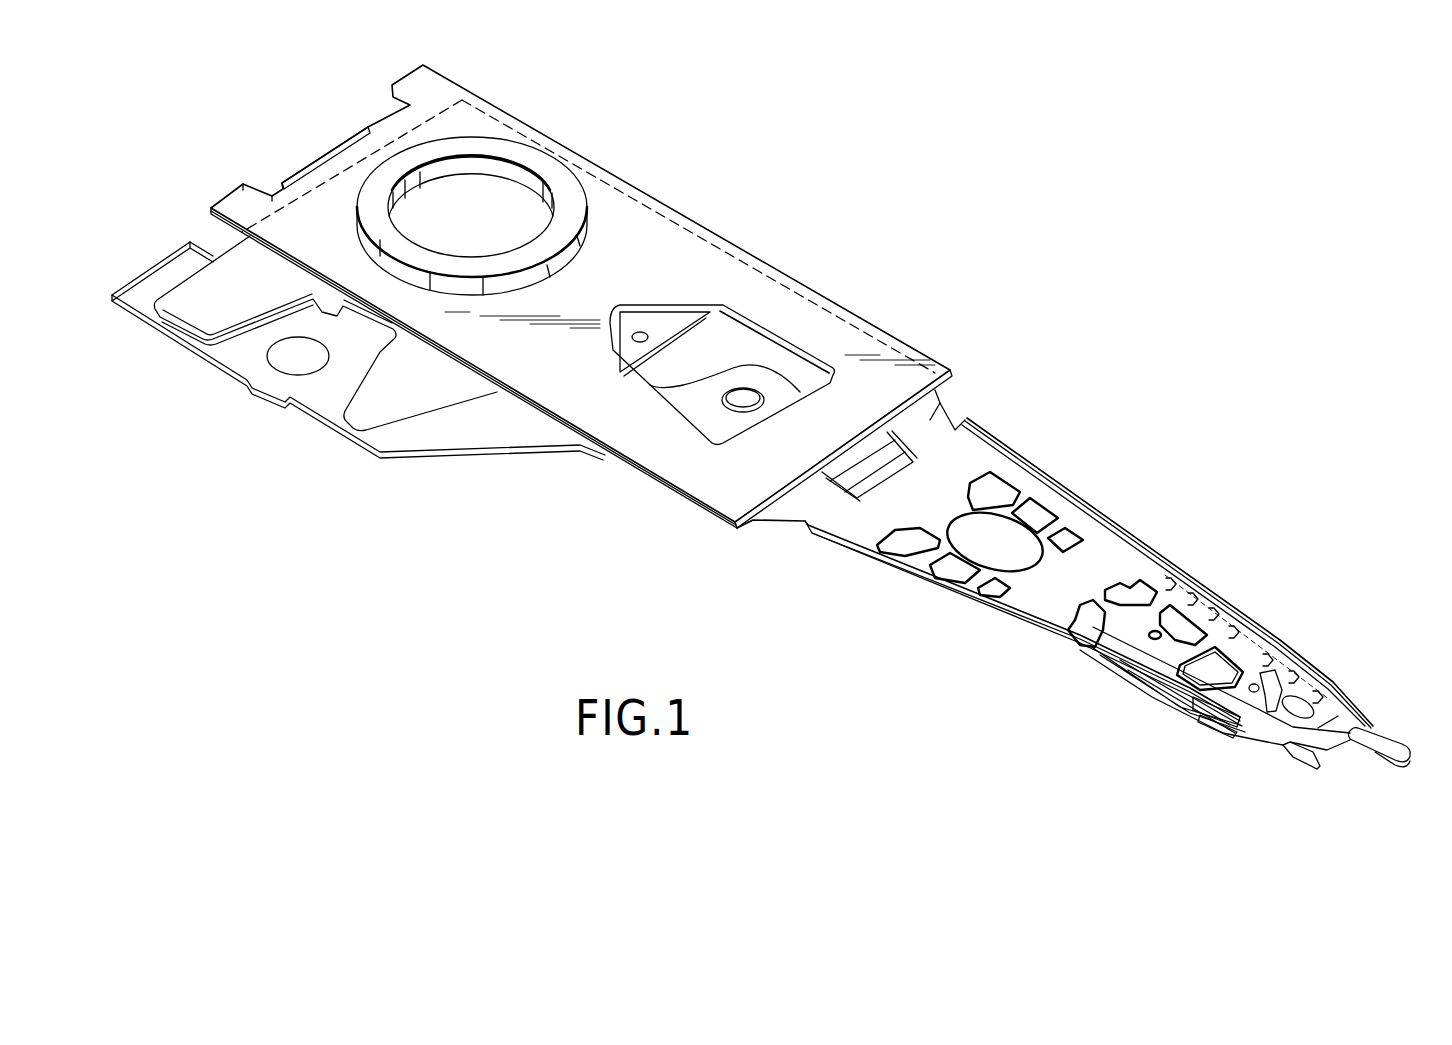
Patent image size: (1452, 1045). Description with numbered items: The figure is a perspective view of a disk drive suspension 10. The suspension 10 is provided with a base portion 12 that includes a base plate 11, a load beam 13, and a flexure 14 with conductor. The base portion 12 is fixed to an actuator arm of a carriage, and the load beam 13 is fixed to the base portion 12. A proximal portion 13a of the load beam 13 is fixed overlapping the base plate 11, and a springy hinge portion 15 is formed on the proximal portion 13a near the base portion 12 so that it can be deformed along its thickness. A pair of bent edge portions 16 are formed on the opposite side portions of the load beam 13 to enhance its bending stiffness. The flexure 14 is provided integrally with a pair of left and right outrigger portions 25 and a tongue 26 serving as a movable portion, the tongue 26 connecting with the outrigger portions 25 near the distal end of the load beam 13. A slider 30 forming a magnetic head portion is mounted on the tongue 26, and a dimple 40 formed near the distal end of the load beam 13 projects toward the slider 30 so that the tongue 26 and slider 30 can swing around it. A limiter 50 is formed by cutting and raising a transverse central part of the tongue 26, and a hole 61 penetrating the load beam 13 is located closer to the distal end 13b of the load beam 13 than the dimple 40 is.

The disk drive suspension 10 is at (1020, 251).
The base plate 11 is at (683, 253).
The base portion 12 is at (811, 281).
The load beam 13 is at (1155, 550).
The proximal portion 13a is at (612, 215).
The distal end 13b is at (1407, 745).
The flexure 14 is at (1117, 703).
The hinge portion 15 is at (937, 423).
The bent edge portions 16 is at (1083, 510).
The outrigger portions 25 is at (1213, 730).
The tongue 26 is at (1162, 708).
The slider 30 is at (1200, 720).
The dimple 40 is at (1252, 685).
The limiter 50 is at (1268, 678).
The hole 61 is at (1322, 725).